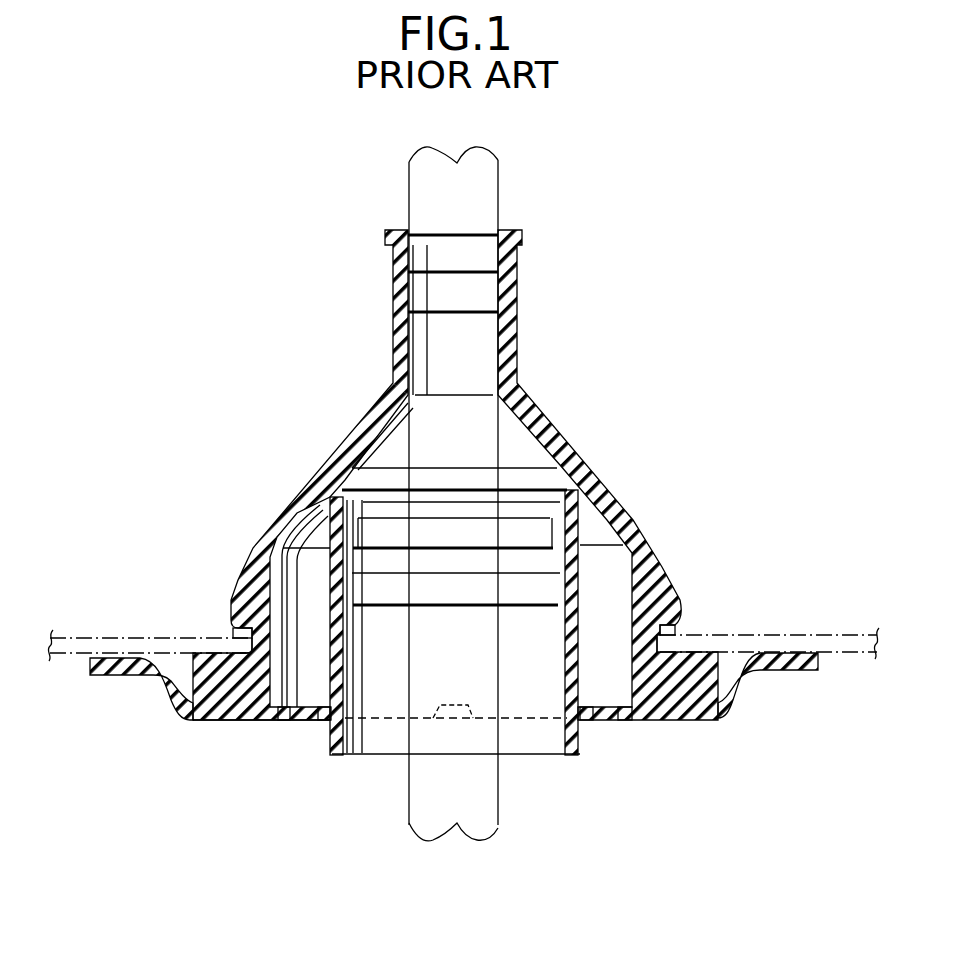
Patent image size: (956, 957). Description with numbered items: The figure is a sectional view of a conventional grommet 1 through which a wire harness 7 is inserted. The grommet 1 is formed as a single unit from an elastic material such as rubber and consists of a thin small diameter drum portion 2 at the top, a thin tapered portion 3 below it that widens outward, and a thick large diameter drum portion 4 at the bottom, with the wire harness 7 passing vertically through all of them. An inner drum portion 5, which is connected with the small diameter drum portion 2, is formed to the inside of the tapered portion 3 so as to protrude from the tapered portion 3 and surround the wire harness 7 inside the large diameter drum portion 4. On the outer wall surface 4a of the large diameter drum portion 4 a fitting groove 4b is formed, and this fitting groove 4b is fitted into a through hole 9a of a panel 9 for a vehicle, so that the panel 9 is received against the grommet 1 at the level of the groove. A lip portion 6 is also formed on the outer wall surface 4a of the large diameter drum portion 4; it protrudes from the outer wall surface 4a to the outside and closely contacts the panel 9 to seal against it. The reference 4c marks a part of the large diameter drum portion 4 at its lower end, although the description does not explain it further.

The grommet 1 is at (643, 480).
The small diameter drum portion 2 is at (515, 310).
The tapered portion 3 is at (563, 440).
The large diameter drum portion 4 is at (682, 587).
The outer wall surface 4a is at (687, 621).
The fitting groove 4b is at (232, 628).
The bottom surface 4c is at (222, 721).
The inner drum portion 5 is at (330, 652).
The lip portion 6 is at (767, 680).
The wire harness 7 is at (488, 193).
The panel 9 is at (837, 633).
The through hole 9a is at (638, 632).